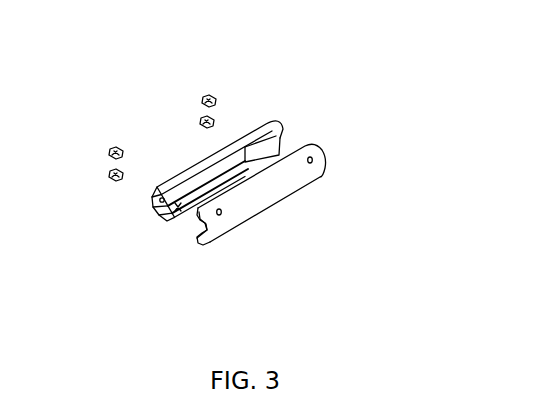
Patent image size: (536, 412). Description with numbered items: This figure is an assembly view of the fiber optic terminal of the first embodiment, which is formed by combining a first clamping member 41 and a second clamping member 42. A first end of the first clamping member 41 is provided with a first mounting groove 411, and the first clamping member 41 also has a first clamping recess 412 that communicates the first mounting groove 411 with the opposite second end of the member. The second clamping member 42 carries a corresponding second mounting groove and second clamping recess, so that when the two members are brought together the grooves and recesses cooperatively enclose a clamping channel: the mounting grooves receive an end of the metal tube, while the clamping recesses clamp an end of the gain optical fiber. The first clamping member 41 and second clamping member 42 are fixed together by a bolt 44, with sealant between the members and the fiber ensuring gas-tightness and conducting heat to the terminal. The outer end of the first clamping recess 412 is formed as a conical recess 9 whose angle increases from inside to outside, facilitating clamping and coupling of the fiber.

The conical recess 9 is at (168, 202).
The first clamping member 41 is at (236, 141).
The second clamping member 42 is at (325, 160).
The bolt 44 is at (215, 132).
The first mounting groove 411 is at (280, 145).
The first clamping recess 412 is at (200, 213).